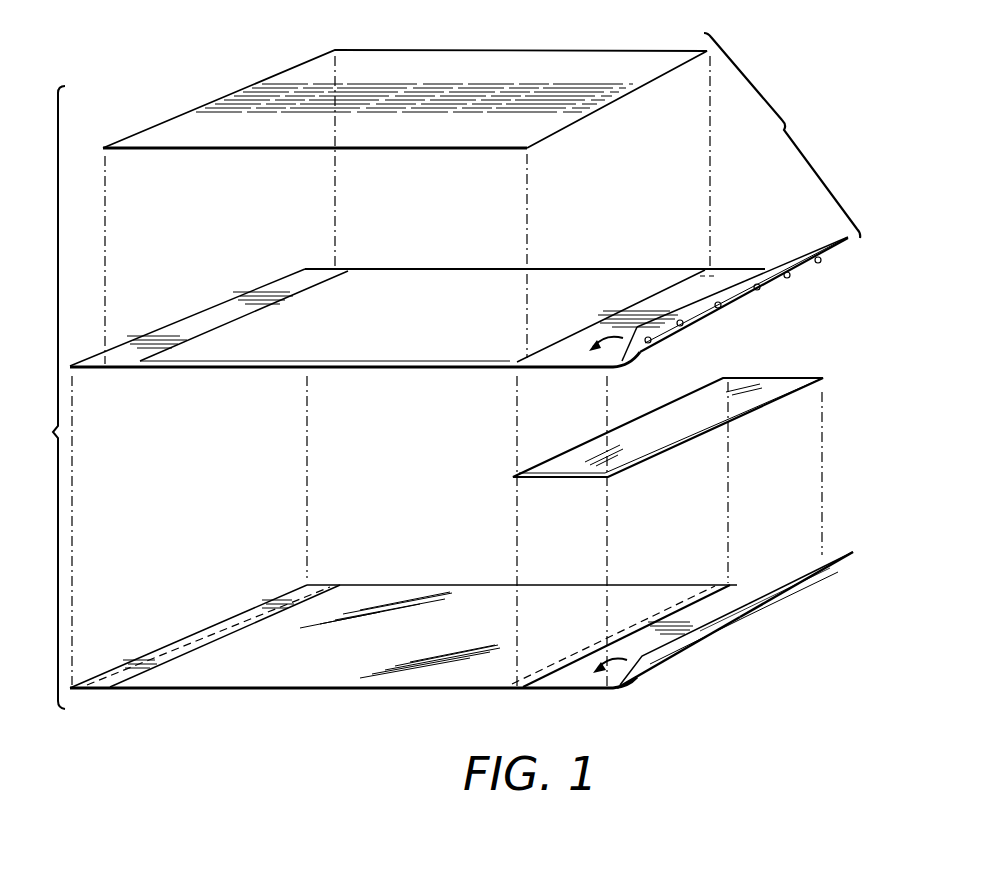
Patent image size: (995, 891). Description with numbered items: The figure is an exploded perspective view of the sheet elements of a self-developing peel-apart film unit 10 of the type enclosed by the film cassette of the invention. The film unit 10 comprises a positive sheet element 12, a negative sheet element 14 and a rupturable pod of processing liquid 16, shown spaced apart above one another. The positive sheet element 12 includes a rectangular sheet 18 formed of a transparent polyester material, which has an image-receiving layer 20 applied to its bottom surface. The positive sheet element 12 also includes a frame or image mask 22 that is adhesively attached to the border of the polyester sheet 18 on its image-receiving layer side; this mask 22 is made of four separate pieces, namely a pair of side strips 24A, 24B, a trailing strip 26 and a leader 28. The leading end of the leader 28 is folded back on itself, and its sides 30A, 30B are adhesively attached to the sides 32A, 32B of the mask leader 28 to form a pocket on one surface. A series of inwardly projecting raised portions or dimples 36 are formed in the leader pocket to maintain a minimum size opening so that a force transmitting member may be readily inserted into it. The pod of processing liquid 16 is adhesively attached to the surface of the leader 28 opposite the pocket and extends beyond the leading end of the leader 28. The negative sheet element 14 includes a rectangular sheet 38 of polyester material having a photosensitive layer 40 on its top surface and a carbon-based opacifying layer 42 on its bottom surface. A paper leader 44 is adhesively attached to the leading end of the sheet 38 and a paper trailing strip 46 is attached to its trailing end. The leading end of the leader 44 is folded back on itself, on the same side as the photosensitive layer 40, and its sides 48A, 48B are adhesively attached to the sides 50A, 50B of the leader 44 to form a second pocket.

The self-developing peel-apart film unit 10 is at (46, 397).
The positive sheet element 12 is at (782, 135).
The negative sheet element 14 is at (220, 592).
The rupturable pod of processing liquid 16 is at (512, 476).
The rectangular sheet 18 is at (276, 72).
The image-receiving layer 20 is at (180, 152).
The frame or image mask 22 is at (660, 242).
The side strip 24A is at (562, 268).
The side strip 24B is at (386, 372).
The trailing strip 26 is at (197, 313).
The leader 28 is at (512, 370).
The side of folded leader end 30A is at (638, 358).
The side of folded leader end 30B is at (838, 248).
The side of mask leader 32A is at (583, 372).
The side of mask leader 32B is at (766, 268).
The raised portions or dimples 36 is at (788, 279).
The rectangular sheet 38 is at (212, 690).
The photosensitive layer 40 is at (322, 672).
The carbon-based opacifying layer 42 is at (440, 690).
The leader 44 is at (738, 592).
The trailing strip 46 is at (95, 682).
The side of folded leader end 48A is at (640, 670).
The side of folded leader end 48B is at (838, 573).
The side of leader 50A is at (590, 693).
The side of leader 50B is at (762, 590).